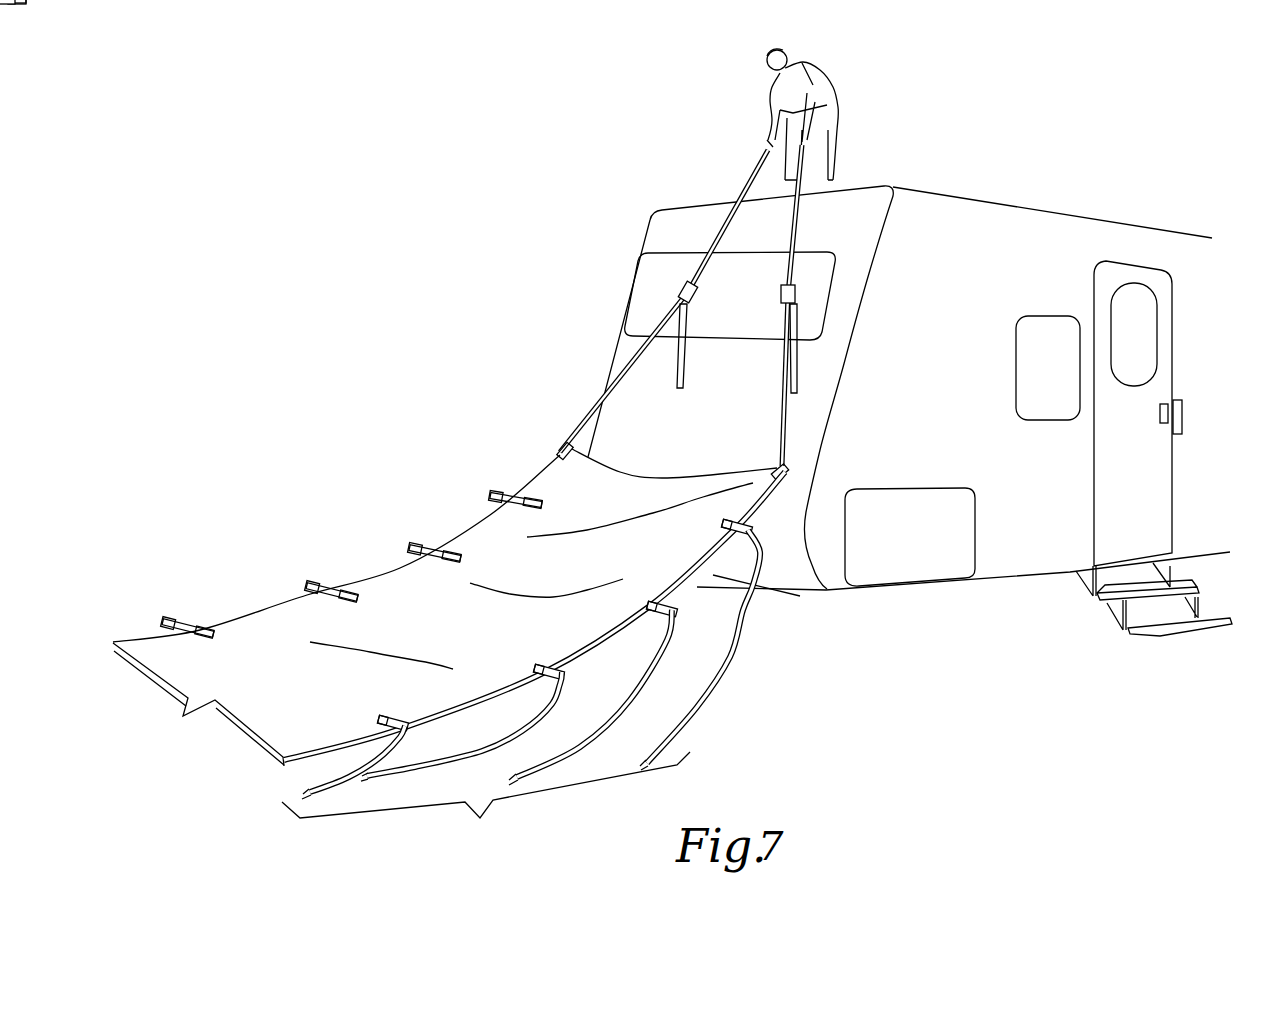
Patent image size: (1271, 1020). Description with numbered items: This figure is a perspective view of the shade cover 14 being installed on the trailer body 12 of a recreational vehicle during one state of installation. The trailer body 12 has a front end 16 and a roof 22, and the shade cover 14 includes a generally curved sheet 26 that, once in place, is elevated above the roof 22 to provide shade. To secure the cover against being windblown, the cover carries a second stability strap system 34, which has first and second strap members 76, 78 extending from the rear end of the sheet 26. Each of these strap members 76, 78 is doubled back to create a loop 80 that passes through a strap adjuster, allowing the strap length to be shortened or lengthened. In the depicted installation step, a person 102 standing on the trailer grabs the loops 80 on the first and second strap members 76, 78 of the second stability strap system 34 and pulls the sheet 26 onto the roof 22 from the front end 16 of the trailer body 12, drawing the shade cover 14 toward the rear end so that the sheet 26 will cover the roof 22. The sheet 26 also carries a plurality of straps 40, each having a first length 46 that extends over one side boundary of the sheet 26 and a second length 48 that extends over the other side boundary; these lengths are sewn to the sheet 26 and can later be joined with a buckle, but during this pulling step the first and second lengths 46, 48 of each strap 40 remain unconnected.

The trailer body 12 is at (986, 192).
The shade cover 14 is at (358, 517).
The front end 16 is at (743, 243).
The roof 22 is at (1090, 209).
The sheet 26 is at (482, 540).
The second stability strap system 34 is at (768, 377).
The straps 40 is at (486, 801).
The first length 46 is at (720, 663).
The second length 48 is at (522, 493).
The first strap member 76 is at (782, 406).
The second strap member 78 is at (585, 422).
The loop 80 is at (753, 162).
The person 102 is at (800, 68).